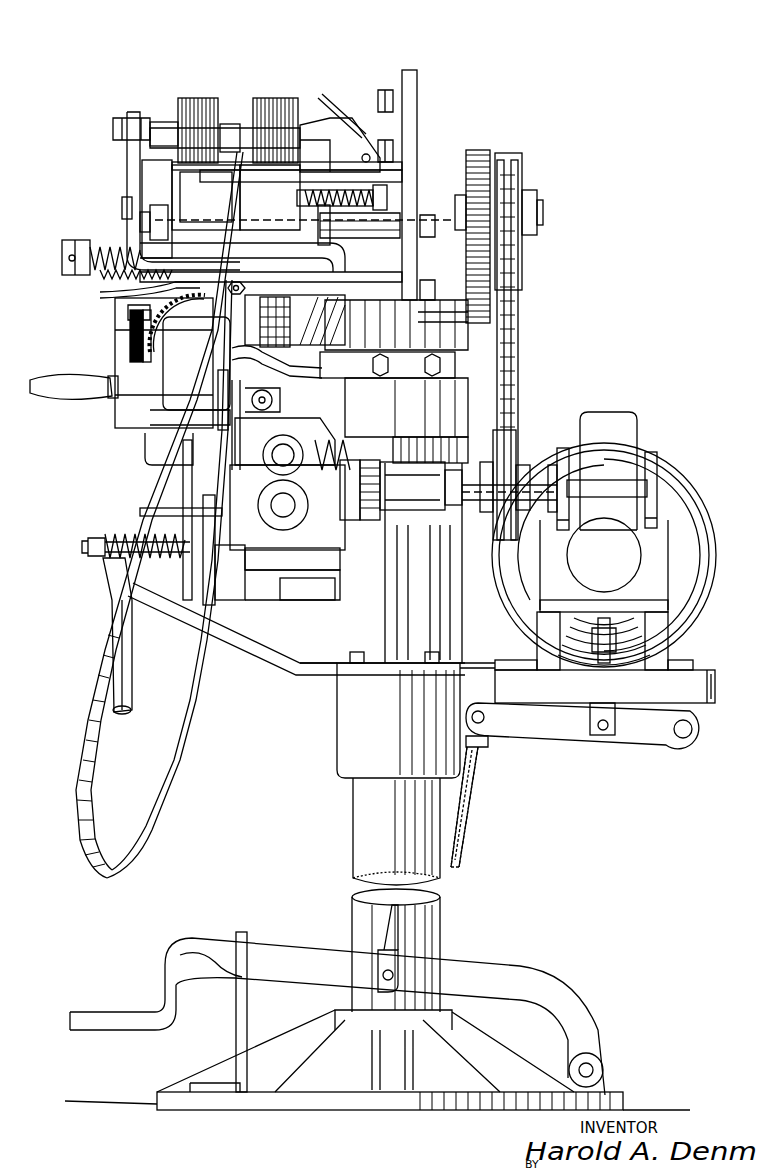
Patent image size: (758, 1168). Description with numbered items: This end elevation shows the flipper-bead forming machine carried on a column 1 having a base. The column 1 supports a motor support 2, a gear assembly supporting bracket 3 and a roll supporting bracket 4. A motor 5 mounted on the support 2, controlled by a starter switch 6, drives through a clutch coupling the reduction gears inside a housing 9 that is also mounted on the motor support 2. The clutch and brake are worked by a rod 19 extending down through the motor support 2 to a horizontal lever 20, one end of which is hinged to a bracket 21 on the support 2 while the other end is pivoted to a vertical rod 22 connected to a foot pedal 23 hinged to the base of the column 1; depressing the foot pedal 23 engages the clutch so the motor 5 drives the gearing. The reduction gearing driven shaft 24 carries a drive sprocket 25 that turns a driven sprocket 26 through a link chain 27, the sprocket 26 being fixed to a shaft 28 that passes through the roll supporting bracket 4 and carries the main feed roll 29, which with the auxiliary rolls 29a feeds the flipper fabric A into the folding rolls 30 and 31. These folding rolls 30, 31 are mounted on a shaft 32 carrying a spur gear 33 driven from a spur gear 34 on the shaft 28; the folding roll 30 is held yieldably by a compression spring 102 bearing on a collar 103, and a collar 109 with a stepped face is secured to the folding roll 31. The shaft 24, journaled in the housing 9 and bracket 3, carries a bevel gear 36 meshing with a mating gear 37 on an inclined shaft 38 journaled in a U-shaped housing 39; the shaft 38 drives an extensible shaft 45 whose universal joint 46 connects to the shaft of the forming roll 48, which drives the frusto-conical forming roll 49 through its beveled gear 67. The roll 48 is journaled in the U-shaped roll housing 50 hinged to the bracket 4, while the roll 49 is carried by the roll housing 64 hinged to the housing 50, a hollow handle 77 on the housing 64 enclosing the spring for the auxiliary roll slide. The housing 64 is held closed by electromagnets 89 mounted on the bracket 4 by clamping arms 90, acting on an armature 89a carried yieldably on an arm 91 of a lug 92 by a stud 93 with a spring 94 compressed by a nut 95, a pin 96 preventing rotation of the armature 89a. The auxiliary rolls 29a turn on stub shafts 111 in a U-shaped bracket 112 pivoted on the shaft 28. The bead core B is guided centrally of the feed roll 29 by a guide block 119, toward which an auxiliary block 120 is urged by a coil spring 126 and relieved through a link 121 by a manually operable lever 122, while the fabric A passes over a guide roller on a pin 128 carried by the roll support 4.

The column 1 is at (352, 828).
The motor support 2 is at (715, 687).
The gear assembly supporting bracket 3 is at (450, 522).
The roll supporting bracket 4 is at (418, 80).
The motor 5 is at (712, 522).
The starter switch 6 is at (216, 400).
The housing 9 is at (637, 428).
The rod 19 is at (610, 663).
The horizontal lever 20 is at (541, 742).
The bracket 21 is at (700, 722).
The vertical rod 22 is at (468, 836).
The foot pedal 23 is at (500, 972).
The reduction gearing driven shaft 24 is at (552, 465).
The drive sprocket 25 is at (518, 440).
The driven sprocket 26 is at (522, 160).
The link chain 27 is at (518, 372).
The shaft 28 is at (543, 213).
The main feed roll 29 is at (150, 172).
The auxiliary rolls 29a is at (196, 98).
The folding roll 30 is at (150, 300).
The folding roll 31 is at (276, 360).
The shaft 32 is at (62, 254).
The spur gear 33 is at (490, 318).
The spur gear 34 is at (488, 150).
The bevel gear 36 is at (332, 472).
The mating gear 37 is at (280, 475).
The inclined shaft 38 is at (292, 522).
The U-shaped housing 39 is at (368, 526).
The extensible shaft 45 is at (243, 440).
The universal joint 46 is at (273, 402).
The forming roll 48 is at (338, 318).
The forming roll 49 is at (190, 371).
The roll housing 50 is at (348, 378).
The roll housing 64 is at (130, 340).
The beveled gear 67 is at (128, 315).
The hollow handle 77 is at (40, 393).
The electromagnets 89 is at (258, 627).
The armature 89a is at (206, 596).
The clamping arms 90 is at (342, 588).
The arm 91 is at (145, 452).
The lug 92 is at (135, 405).
The stud 93 is at (82, 547).
The spring 94 is at (118, 532).
The nut 95 is at (103, 560).
The pin 96 is at (140, 510).
The compression spring 102 is at (100, 295).
The collar 103 is at (100, 278).
The collar 109 is at (336, 340).
The stub shafts 111 is at (113, 128).
The U-shaped bracket 112 is at (127, 150).
The guide block 119 is at (200, 172).
The auxiliary block 120 is at (275, 125).
The link 121 is at (312, 120).
The manually operable lever 122 is at (328, 104).
The coil spring 126 is at (365, 192).
The pin 128 is at (143, 228).
The flipper fabric A is at (270, 209).
The bead core B is at (76, 770).